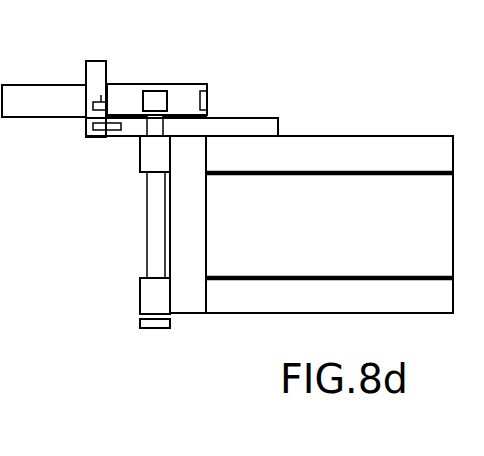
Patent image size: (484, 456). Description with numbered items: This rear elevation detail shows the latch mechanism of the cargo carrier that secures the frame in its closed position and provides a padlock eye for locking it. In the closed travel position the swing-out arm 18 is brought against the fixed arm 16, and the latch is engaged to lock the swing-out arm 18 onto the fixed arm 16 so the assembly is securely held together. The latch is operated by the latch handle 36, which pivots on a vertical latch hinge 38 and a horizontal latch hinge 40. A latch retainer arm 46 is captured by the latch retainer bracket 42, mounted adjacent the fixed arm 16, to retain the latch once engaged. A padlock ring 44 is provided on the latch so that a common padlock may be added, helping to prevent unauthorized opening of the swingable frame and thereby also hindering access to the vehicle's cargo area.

The fixed arm 16 is at (352, 218).
The swing-out arm 18 is at (280, 147).
The latch handle 36 is at (72, 85).
The vertical latch hinge 38 is at (157, 235).
The horizontal latch hinge 40 is at (152, 92).
The latch retainer bracket 42 is at (187, 292).
The padlock ring 44 is at (100, 142).
The latch retainer arm 46 is at (105, 61).